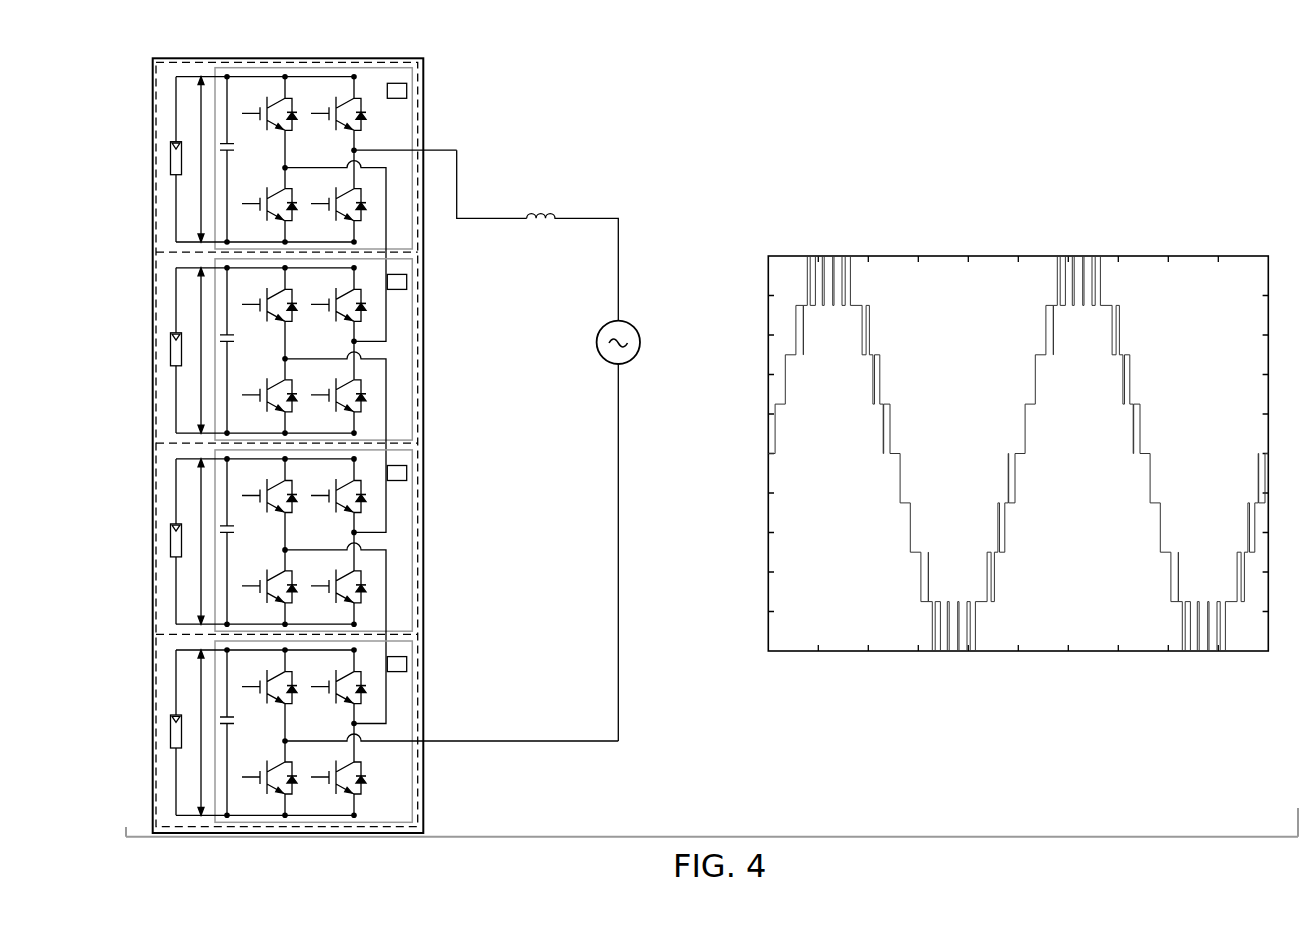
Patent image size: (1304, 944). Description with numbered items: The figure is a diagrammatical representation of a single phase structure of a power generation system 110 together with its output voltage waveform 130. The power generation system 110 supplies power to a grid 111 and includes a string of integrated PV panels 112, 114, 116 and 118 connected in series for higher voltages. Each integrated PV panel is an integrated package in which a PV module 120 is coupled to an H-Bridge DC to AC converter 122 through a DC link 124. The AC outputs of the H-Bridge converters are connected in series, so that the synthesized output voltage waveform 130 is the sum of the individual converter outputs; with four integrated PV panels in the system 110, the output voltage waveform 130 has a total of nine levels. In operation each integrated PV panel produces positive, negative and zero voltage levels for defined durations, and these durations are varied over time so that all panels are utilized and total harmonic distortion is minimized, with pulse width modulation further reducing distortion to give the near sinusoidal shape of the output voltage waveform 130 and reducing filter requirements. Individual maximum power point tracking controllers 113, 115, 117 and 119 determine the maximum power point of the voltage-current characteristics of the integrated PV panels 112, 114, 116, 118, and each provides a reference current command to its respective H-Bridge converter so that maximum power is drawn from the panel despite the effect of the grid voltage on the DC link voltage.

The power generation system 110 is at (586, 101).
The grid 111 is at (605, 362).
The integrated PV panel 112 is at (285, 205).
The maximum power point tracking controller 113 is at (397, 99).
The integrated PV panel 114 is at (281, 396).
The maximum power point tracking controller 115 is at (397, 289).
The integrated PV panel 116 is at (281, 587).
The maximum power point tracking controller 117 is at (397, 481).
The integrated PV panel 118 is at (356, 731).
The maximum power point tracking controller 119 is at (397, 672).
The PV module 120 is at (176, 142).
The H-Bridge DC to AC converter 122 is at (405, 68).
The DC link 124 is at (232, 149).
The output voltage waveform 130 is at (1153, 190).